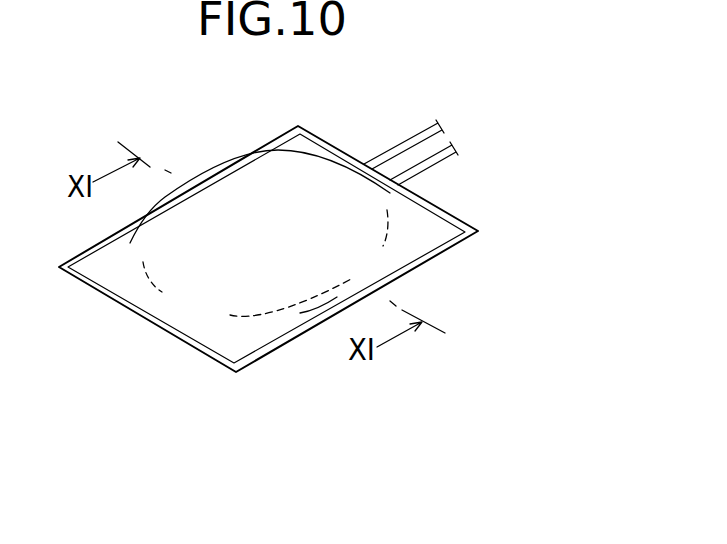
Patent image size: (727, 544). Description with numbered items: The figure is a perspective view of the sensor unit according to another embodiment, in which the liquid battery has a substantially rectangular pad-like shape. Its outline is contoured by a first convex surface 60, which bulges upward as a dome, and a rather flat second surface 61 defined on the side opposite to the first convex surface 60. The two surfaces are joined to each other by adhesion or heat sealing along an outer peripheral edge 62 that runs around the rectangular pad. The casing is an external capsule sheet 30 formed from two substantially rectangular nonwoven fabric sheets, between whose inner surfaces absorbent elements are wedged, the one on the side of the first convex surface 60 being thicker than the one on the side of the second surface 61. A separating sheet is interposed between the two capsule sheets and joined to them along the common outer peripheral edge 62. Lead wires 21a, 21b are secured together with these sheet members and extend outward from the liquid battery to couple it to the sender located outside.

The external capsule sheet 30 is at (503, 104).
The first convex surface 60 is at (232, 182).
The second surface 61 is at (206, 323).
The outer peripheral edge 62 is at (418, 258).
The lead wire 21a is at (427, 165).
The lead wire 21b is at (413, 142).